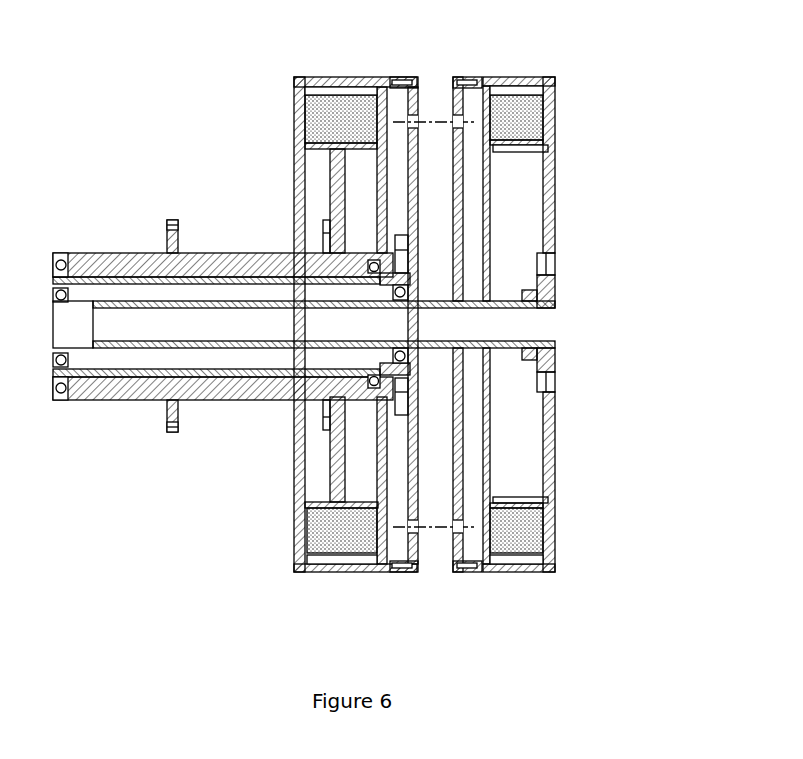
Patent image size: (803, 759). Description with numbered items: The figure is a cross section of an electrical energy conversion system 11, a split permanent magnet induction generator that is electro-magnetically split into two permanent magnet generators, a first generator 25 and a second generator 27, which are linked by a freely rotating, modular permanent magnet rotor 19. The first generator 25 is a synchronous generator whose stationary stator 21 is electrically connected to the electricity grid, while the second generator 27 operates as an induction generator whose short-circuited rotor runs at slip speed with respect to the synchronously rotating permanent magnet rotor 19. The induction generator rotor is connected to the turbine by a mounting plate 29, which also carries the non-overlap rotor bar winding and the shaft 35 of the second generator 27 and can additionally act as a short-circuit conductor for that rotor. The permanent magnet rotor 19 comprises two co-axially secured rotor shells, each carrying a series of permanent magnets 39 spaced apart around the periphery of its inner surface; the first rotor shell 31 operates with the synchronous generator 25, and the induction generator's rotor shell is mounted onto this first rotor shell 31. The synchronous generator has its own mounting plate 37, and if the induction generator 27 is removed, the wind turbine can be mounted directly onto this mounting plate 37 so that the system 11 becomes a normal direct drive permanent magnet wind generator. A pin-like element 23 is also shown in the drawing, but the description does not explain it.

The electrical energy conversion system 11 is at (130, 488).
The permanent magnet rotor 19 is at (320, 573).
The stator 21 is at (301, 125).
The locating pin 23 is at (167, 223).
The first generator 25 is at (277, 490).
The second generator 27 is at (568, 455).
The mounting plate 29 is at (557, 186).
The first rotor shell 31 is at (298, 82).
The shaft 35 is at (542, 325).
The mounting plate 37 is at (421, 128).
The permanent magnets 39 is at (332, 88).